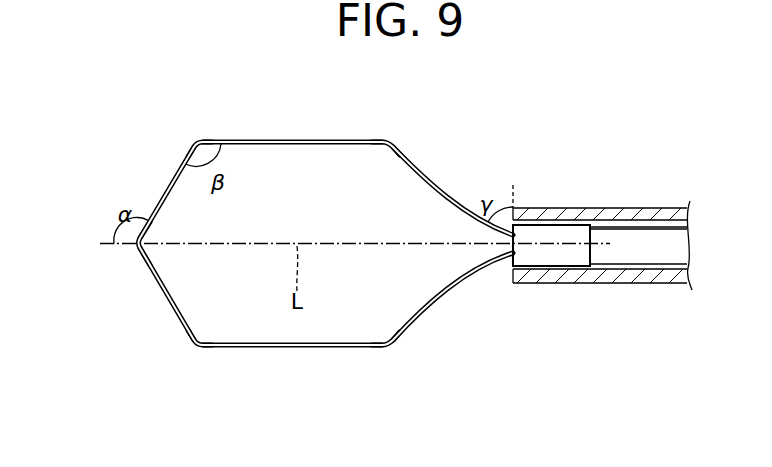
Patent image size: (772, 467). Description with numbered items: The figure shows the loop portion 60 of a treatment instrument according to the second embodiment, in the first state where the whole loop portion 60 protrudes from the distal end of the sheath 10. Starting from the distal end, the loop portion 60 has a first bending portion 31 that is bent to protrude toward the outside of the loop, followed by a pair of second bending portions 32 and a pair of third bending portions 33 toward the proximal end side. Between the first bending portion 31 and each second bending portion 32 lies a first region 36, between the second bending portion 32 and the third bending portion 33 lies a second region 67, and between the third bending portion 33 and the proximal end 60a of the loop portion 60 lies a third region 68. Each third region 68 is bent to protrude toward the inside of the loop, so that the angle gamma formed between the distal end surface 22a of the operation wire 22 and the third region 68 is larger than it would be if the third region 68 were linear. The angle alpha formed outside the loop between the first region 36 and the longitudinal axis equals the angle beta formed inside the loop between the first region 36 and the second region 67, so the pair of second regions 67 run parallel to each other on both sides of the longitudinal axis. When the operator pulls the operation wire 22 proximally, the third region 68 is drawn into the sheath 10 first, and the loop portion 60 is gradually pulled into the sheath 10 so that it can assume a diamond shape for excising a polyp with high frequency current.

The sheath 10 is at (660, 209).
The operation wire 22 is at (646, 256).
The distal end surface of the operation wire 22a is at (509, 266).
The first bending portion 31 is at (135, 241).
The second bending portions 32 is at (198, 140).
The third bending portions 33 is at (388, 139).
The first region 36 is at (165, 191).
The loop portion 60 is at (272, 238).
The proximal end of the loop portion 60a is at (529, 228).
The second regions 67 is at (300, 140).
The third regions 68 is at (440, 190).